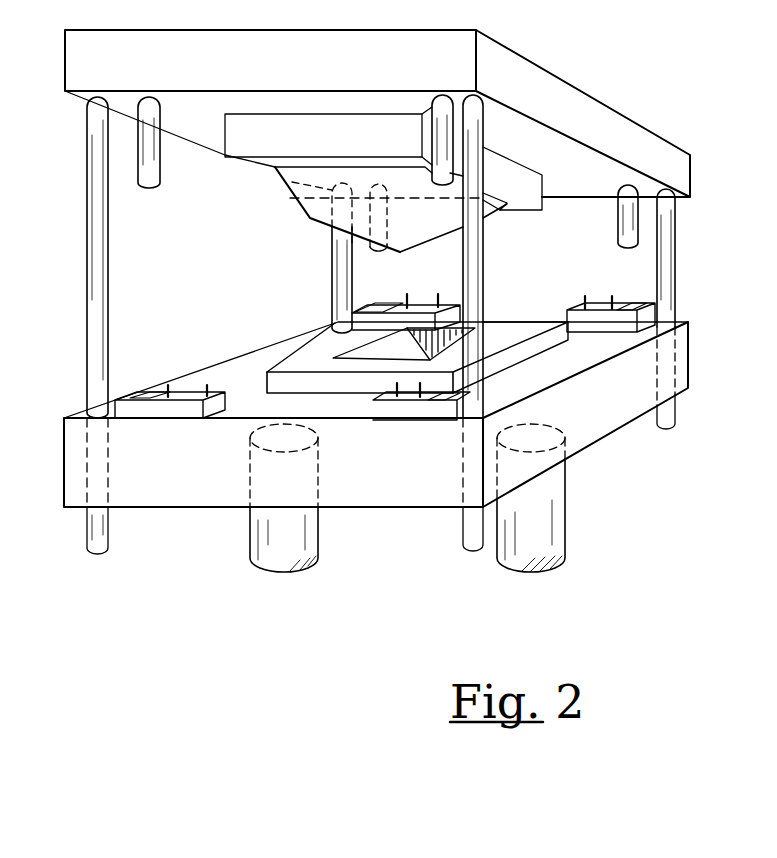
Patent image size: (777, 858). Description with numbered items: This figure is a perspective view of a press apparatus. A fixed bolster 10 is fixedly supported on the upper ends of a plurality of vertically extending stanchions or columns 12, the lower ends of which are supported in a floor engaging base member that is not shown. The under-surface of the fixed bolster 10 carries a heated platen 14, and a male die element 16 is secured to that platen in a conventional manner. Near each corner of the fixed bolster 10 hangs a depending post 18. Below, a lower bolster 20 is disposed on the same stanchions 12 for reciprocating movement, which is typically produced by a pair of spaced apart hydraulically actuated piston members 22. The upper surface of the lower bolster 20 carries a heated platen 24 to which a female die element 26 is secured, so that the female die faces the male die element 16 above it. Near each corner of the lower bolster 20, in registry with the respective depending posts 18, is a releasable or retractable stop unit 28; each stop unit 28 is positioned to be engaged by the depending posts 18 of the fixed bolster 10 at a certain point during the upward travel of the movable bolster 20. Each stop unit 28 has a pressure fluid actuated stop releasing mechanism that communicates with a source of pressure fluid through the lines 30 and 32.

The fixed bolster 10 is at (530, 78).
The stanchions 12 is at (93, 127).
The heated platen 14 is at (233, 138).
The male die element 16 is at (295, 196).
The depending post 18 is at (150, 185).
The lower bolster 20 is at (598, 425).
The hydraulically actuated piston members 22 is at (560, 552).
The heated platen 24 is at (322, 353).
The female die element 26 is at (393, 353).
The stop unit 28 is at (148, 391).
The pressure fluid line 30 is at (207, 392).
The pressure fluid line 32 is at (168, 393).